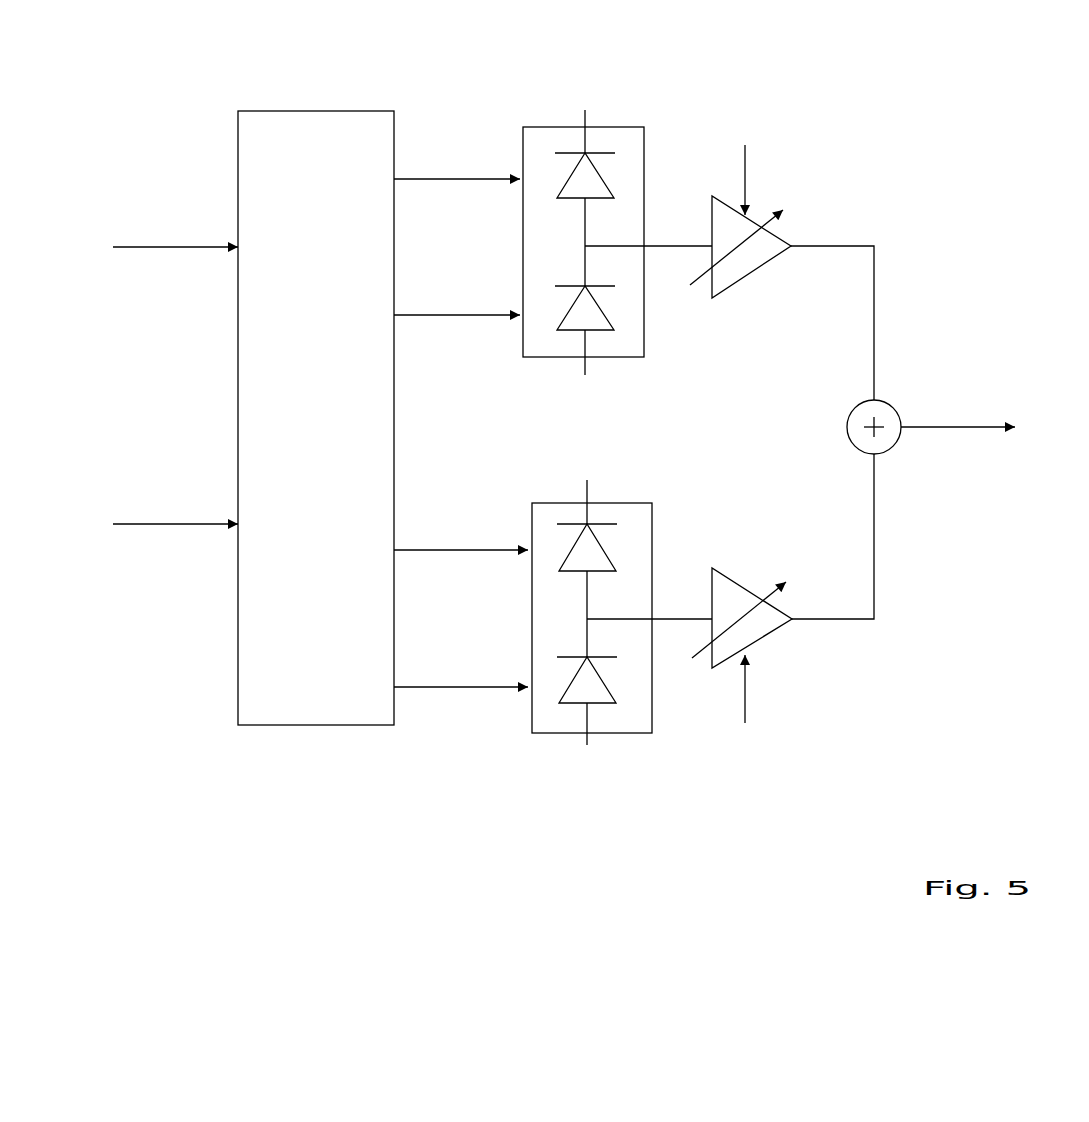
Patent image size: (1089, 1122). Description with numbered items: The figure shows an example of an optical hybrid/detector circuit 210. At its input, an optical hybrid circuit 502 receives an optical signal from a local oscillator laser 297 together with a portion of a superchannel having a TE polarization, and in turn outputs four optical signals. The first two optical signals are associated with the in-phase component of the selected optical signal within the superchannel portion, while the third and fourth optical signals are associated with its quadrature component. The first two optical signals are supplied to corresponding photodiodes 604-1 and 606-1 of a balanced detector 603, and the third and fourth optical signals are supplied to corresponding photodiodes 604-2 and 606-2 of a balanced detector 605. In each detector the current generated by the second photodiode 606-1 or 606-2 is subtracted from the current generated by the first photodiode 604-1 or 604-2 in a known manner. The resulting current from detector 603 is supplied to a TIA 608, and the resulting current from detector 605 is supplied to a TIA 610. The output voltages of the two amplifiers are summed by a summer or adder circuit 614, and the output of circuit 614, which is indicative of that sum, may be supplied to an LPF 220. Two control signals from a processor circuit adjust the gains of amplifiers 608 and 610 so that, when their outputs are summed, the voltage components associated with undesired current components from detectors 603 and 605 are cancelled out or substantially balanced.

The optical hybrid/detector circuit 210 is at (131, 861).
The optical hybrid circuit 502 is at (268, 725).
The balanced detector 603 is at (617, 228).
The photodiode 604-1 is at (598, 153).
The photodiode 606-1 is at (602, 310).
The balanced detector 605 is at (575, 624).
The photodiode 604-2 is at (607, 556).
The photodiode 606-2 is at (588, 703).
The TIA 608 is at (752, 273).
The TIA 610 is at (746, 583).
The summer or adder circuit 614 is at (897, 407).
The local oscillator laser 297 is at (175, 492).
The LPF 220 is at (991, 440).